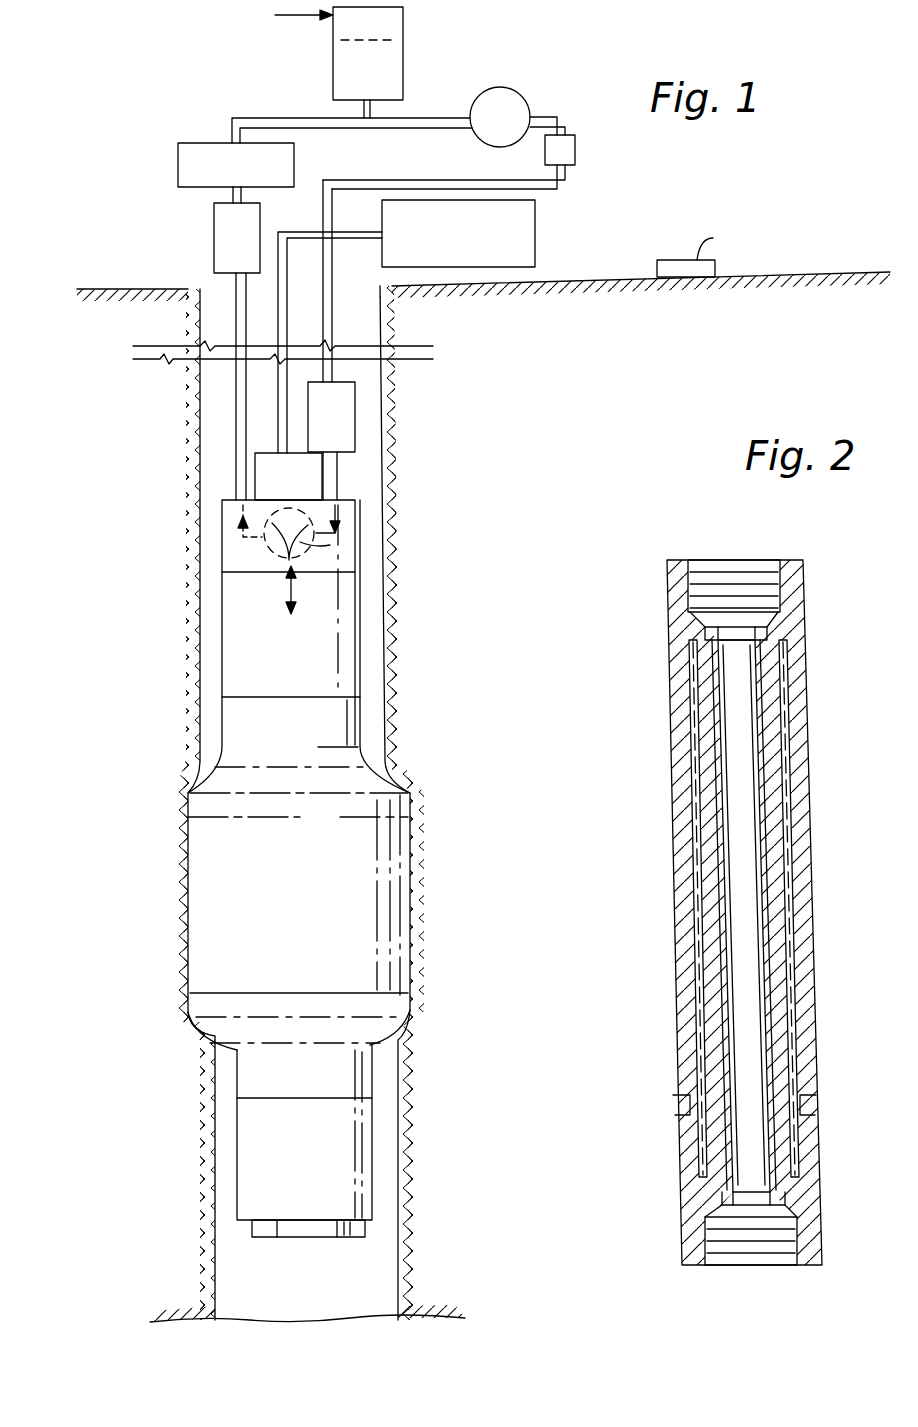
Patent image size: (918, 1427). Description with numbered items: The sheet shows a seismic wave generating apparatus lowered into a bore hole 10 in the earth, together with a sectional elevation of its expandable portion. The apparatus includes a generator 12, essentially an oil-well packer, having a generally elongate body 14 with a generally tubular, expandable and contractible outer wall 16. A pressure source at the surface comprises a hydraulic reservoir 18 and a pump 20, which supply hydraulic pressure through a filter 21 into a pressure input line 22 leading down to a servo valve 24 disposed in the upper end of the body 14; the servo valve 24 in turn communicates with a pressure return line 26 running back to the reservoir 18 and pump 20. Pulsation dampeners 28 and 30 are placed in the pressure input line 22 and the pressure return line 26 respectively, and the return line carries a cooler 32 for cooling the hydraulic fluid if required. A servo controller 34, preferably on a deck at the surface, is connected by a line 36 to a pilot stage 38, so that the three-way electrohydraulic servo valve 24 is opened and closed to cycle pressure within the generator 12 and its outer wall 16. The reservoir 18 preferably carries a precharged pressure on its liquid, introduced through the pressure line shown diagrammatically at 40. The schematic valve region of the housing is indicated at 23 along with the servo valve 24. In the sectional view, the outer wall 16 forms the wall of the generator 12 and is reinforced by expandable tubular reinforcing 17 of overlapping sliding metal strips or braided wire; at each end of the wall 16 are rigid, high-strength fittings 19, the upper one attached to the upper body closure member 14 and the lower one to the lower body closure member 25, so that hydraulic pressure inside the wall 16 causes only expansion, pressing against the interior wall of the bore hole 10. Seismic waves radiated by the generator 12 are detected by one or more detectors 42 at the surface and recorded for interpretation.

In FIG. 1, the bore hole 10 is at (392, 590).
In FIG. 1, the generator 12 is at (374, 718).
In FIG. 1, the elongate body 14 is at (372, 648).
In FIG. 1, the expandable and contractible outer wall 16 is at (390, 862).
In FIG. 2, the expandable and contractible outer wall 16 is at (808, 950).
In FIG. 2, the expandable tubular reinforcing 17 is at (785, 818).
In FIG. 1, the hydraulic reservoir 18 is at (403, 25).
In FIG. 2, the upper and lower fittings 19 is at (785, 630).
In FIG. 1, the pump 20 is at (500, 87).
In FIG. 1, the filter 21 is at (575, 150).
In FIG. 1, the pressure input line 22 is at (360, 180).
In FIG. 1, the valve housing 23 is at (340, 520).
In FIG. 1, the servo valve 24 is at (340, 553).
In FIG. 1, the lower body closure member 25 is at (373, 1162).
In FIG. 1, the pressure return line 26 is at (236, 420).
In FIG. 1, the pulsation dampener 28 is at (355, 440).
In FIG. 1, the pulsation dampener 30 is at (214, 236).
In FIG. 1, the cooler 32 is at (178, 158).
In FIG. 1, the servo controller 34 is at (535, 222).
In FIG. 1, the line 36 is at (302, 232).
In FIG. 1, the pilot stage 38 is at (300, 485).
In FIG. 1, the pressure line 40 is at (298, 20).
In FIG. 1, the detector 42 is at (662, 260).